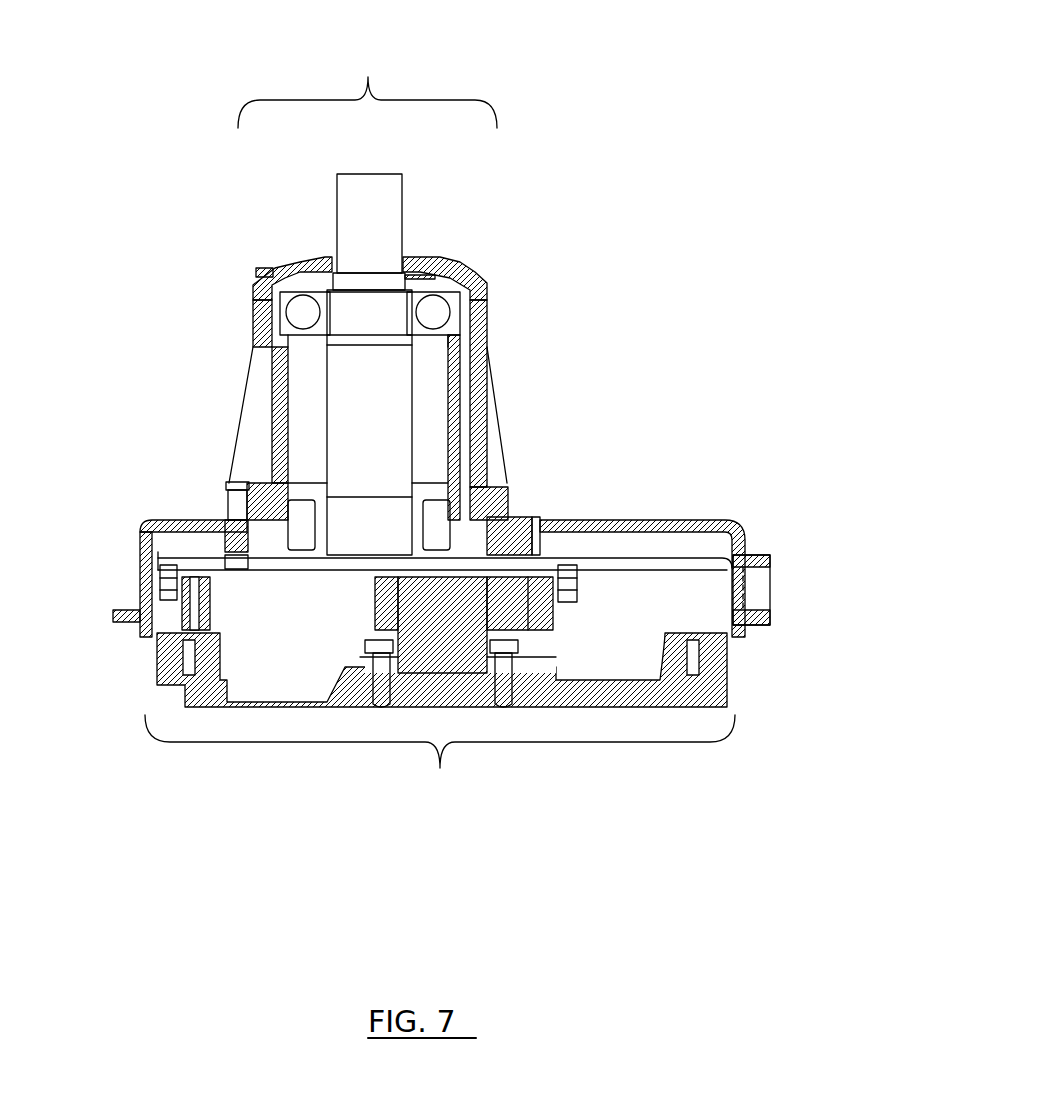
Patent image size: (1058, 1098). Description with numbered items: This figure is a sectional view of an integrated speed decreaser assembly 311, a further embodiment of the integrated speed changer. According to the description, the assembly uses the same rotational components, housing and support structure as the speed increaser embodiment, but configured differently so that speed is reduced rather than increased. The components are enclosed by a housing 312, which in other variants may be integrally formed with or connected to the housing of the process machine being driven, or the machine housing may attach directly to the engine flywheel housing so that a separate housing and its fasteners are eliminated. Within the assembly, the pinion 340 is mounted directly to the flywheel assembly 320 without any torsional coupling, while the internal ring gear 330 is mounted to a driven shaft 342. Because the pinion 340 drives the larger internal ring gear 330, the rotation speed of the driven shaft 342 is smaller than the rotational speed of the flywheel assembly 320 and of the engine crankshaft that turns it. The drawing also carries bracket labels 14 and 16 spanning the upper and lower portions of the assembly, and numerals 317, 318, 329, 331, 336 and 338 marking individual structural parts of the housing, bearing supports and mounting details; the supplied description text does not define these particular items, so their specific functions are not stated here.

The motor assembly 14 is at (367, 87).
The pump base assembly 16 is at (440, 757).
The integrated speed decreaser assembly 311 is at (630, 52).
The housing 312 is at (632, 520).
The upper bearing cap 317 is at (300, 262).
The bearing housing 318 is at (272, 370).
The flywheel assembly 320 is at (105, 635).
The spacer flange 329 is at (540, 520).
The internal ring gear 330 is at (190, 585).
The outlet port 331 is at (765, 578).
The lower bearing flange 336 is at (272, 485).
The upper cap 338 is at (470, 262).
The pinion 340 is at (497, 588).
The driven shaft 342 is at (390, 209).